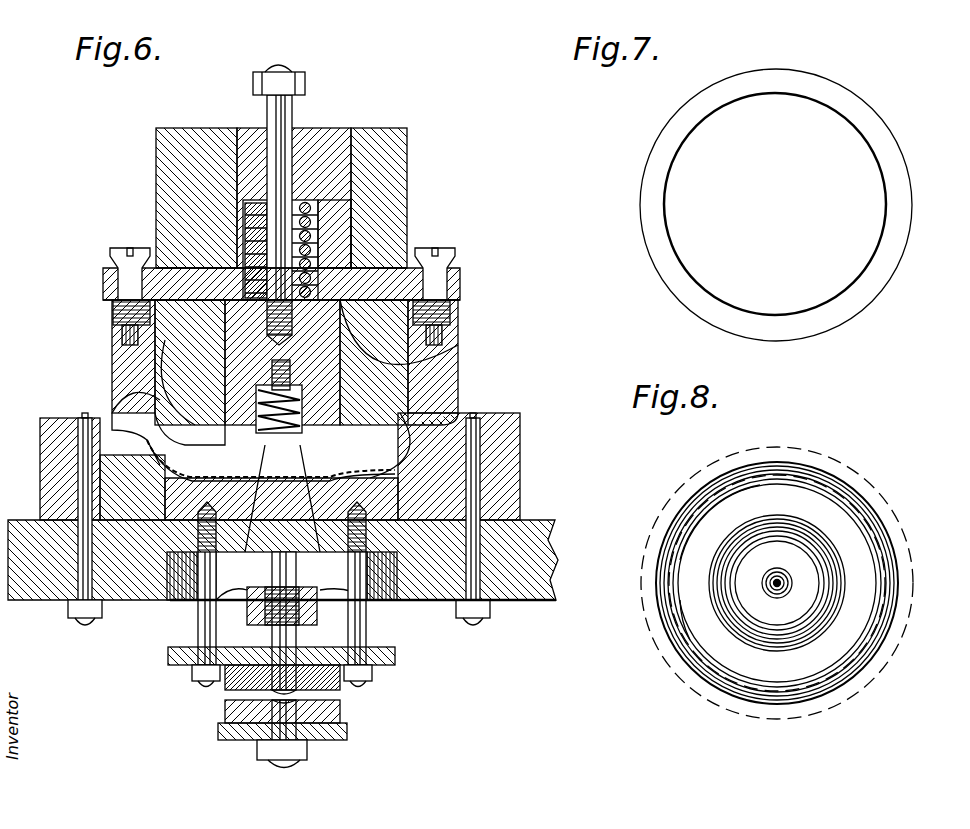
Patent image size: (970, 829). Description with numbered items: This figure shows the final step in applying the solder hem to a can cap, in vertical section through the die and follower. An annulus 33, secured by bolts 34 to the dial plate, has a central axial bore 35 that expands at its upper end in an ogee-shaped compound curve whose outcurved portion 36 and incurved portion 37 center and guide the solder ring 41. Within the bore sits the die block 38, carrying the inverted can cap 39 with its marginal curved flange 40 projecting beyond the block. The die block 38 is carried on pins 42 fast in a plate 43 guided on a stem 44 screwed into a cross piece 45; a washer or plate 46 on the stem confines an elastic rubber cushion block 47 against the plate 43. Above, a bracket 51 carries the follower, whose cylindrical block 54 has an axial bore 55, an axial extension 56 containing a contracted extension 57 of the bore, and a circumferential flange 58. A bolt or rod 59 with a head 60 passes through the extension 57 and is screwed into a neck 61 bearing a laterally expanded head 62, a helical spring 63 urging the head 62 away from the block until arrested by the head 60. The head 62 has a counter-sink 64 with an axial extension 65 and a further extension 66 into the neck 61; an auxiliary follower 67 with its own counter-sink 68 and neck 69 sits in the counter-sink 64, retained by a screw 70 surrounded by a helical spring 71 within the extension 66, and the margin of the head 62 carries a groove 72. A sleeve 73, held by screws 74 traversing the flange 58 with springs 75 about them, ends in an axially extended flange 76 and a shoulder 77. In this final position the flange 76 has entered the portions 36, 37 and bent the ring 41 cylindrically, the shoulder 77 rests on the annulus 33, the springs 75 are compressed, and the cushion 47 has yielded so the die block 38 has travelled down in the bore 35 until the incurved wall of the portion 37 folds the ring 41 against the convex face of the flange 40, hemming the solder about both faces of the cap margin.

In FIG. 6, the annulus 33 is at (522, 503).
In FIG. 6, the bolts 34 is at (90, 630).
In FIG. 6, the central axial bore 35 is at (398, 600).
In FIG. 6, the outcurved portion of compound curve 36 is at (522, 420).
In FIG. 6, the incurved portion of compound curve 37 is at (402, 462).
In FIG. 6, the die block 38 is at (556, 532).
In FIG. 6, the can cap 39 is at (382, 576).
In FIG. 8, the can cap 39 is at (777, 583).
In FIG. 6, the marginal curved flange 40 is at (178, 480).
In FIG. 8, the marginal curved flange 40 is at (880, 586).
In FIG. 6, the solder ring 41 is at (165, 462).
In FIG. 7, the solder ring 41 is at (776, 205).
In FIG. 8, the solder ring 41 is at (875, 494).
In FIG. 6, the pins 42 is at (200, 633).
In FIG. 6, the plate 43 is at (170, 657).
In FIG. 6, the stem 44 is at (282, 712).
In FIG. 6, the cross piece 45 is at (318, 608).
In FIG. 6, the washer or plate 46 is at (220, 731).
In FIG. 6, the cushion block 47 is at (342, 711).
In FIG. 6, the bracket 51 is at (392, 158).
In FIG. 6, the cylindrical block 54 is at (459, 357).
In FIG. 6, the axial bore 55 is at (405, 300).
In FIG. 6, the axial extension 56 is at (233, 148).
In FIG. 6, the contracted extension of bore 57 is at (322, 208).
In FIG. 6, the circumferential flange 58 is at (462, 276).
In FIG. 6, the bolt or rod 59 is at (280, 114).
In FIG. 6, the head of bolt 60 is at (304, 83).
In FIG. 6, the neck 61 is at (113, 350).
In FIG. 6, the laterally expanded head 62 is at (163, 382).
In FIG. 6, the helical spring 63 is at (250, 222).
In FIG. 6, the counter-sink 64 is at (302, 410).
In FIG. 6, the axial extension of counter-sink 65 is at (152, 452).
In FIG. 6, the further axial extension 66 is at (402, 362).
In FIG. 6, the auxiliary follower 67 is at (208, 576).
In FIG. 6, the counter-sink of auxiliary follower 68 is at (291, 576).
In FIG. 6, the neck of auxiliary follower 69 is at (294, 511).
In FIG. 6, the screw 70 is at (294, 651).
In FIG. 6, the helical spring 71 is at (176, 270).
In FIG. 6, the groove 72 is at (445, 428).
In FIG. 6, the sleeve 73 is at (116, 337).
In FIG. 6, the screws 74 is at (118, 250).
In FIG. 6, the springs 75 is at (115, 312).
In FIG. 6, the axially extended flange 76 is at (78, 420).
In FIG. 6, the shoulder 77 is at (132, 412).